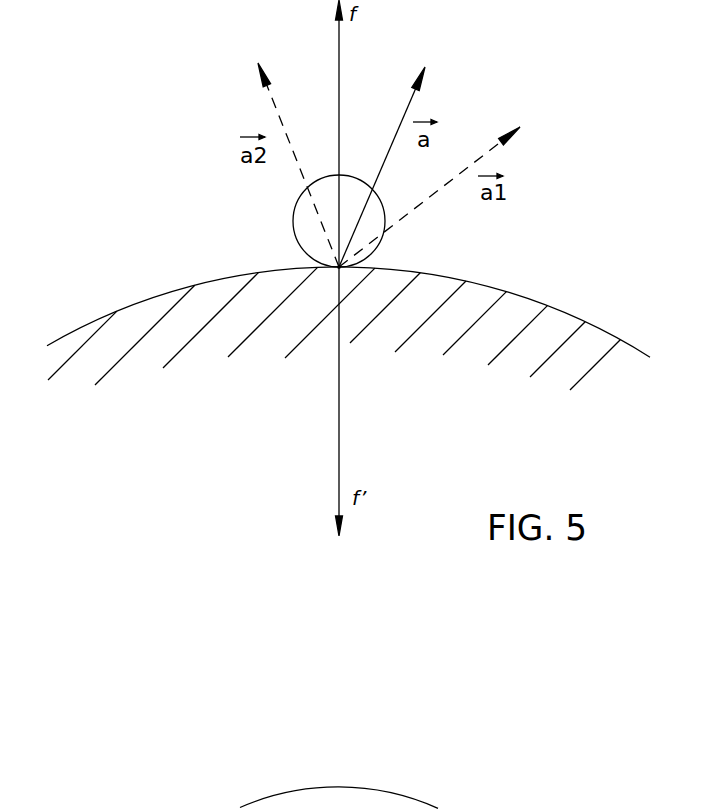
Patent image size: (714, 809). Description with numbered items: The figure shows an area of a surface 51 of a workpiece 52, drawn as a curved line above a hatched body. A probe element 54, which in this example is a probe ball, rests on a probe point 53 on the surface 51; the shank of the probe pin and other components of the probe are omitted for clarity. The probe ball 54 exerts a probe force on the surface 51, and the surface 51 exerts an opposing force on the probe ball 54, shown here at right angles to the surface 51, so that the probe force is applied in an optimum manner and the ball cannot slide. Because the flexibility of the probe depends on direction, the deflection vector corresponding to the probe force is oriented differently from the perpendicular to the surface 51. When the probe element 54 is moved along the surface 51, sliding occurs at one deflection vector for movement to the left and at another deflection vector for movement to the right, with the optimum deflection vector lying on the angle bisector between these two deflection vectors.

The surface 51 is at (528, 297).
The workpiece 52 is at (463, 403).
The probe point 53 is at (338, 268).
The probe element 54 is at (292, 220).